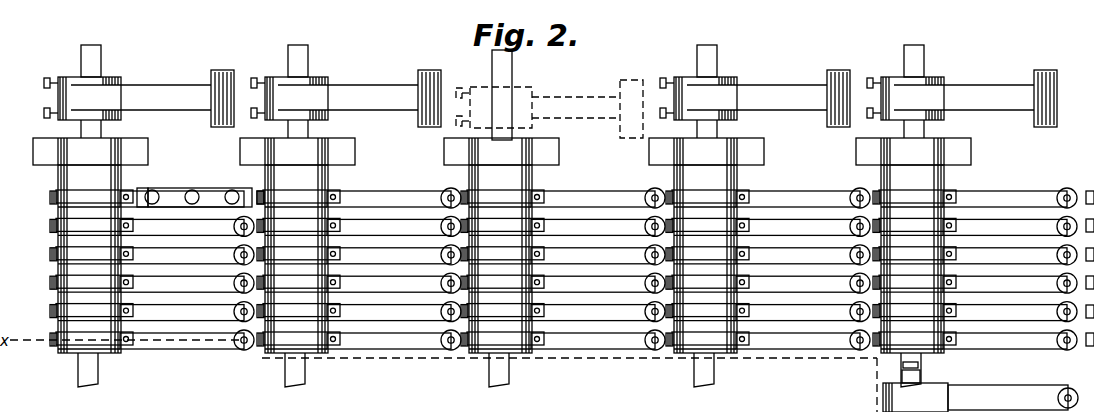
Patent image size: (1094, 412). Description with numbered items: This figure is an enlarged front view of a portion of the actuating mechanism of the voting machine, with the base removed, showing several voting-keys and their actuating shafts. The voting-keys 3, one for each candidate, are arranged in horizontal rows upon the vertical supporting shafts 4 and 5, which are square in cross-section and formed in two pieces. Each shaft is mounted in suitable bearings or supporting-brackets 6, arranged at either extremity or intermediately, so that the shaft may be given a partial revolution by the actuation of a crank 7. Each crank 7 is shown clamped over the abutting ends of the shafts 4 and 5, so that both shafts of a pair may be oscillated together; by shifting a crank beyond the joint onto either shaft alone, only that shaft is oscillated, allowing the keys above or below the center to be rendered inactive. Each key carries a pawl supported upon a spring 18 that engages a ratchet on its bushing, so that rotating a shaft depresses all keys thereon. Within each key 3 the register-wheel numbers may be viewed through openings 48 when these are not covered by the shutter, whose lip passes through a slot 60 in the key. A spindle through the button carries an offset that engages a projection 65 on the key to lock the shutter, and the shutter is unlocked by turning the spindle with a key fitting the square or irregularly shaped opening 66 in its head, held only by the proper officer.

The voting-key 3 is at (573, 230).
The supporting shaft 4 is at (308, 66).
The supporting shaft 5 is at (309, 126).
The supporting-bracket 6 is at (356, 152).
The crank 7 is at (370, 88).
The spring 18 is at (285, 340).
The opening 48 is at (197, 190).
The slot 60 is at (140, 193).
The projection 65 is at (257, 195).
The opening 66 is at (245, 345).